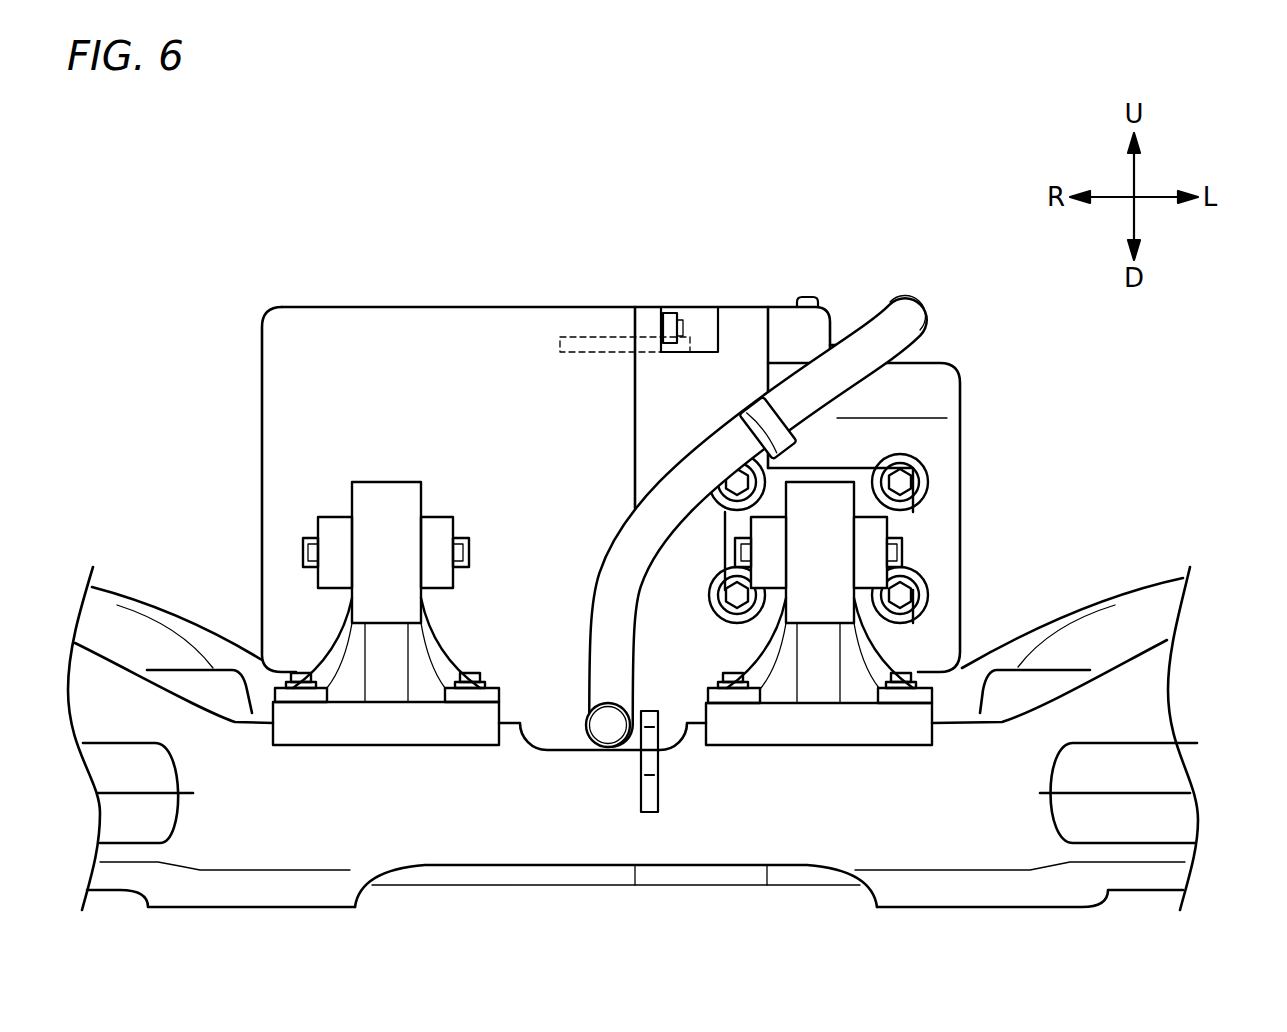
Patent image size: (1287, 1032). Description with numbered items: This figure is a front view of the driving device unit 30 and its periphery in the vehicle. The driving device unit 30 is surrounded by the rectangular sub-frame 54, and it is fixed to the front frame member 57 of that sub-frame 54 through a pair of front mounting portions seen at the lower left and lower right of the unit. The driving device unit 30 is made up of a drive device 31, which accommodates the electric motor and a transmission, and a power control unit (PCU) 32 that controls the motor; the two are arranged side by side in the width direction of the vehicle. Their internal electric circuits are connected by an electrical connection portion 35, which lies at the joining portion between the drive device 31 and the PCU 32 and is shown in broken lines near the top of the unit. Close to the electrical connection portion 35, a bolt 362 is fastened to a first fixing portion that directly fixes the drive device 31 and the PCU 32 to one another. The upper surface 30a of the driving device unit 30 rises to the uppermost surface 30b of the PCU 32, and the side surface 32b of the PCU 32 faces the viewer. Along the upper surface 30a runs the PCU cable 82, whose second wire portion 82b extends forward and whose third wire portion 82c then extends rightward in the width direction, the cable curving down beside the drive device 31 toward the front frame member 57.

The driving device unit 30 is at (613, 440).
The upper surface of the driving device unit 30a is at (648, 307).
The uppermost surface of the PCU 30b is at (393, 307).
The drive device 31 is at (962, 400).
The power control unit (PCU) 32 is at (330, 458).
The side face of first case 32b is at (440, 357).
The electrical connection portion 35 is at (605, 330).
The bolt 362 is at (680, 323).
The sub-frame 54 is at (670, 738).
The front frame member 57 is at (1158, 692).
The PCU cable 82 is at (777, 484).
The second wire portion 82b is at (847, 300).
The third wire portion 82c is at (810, 380).